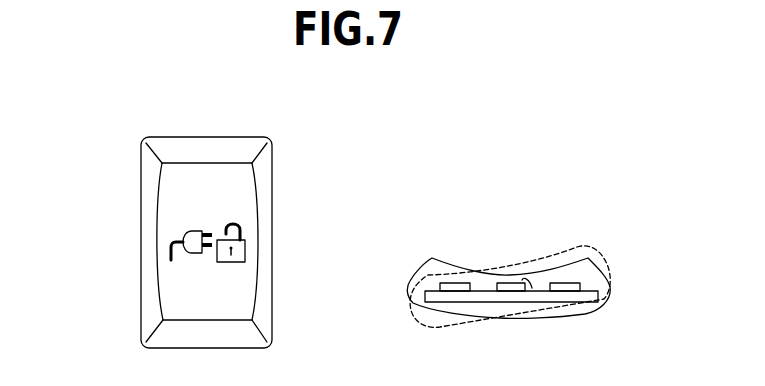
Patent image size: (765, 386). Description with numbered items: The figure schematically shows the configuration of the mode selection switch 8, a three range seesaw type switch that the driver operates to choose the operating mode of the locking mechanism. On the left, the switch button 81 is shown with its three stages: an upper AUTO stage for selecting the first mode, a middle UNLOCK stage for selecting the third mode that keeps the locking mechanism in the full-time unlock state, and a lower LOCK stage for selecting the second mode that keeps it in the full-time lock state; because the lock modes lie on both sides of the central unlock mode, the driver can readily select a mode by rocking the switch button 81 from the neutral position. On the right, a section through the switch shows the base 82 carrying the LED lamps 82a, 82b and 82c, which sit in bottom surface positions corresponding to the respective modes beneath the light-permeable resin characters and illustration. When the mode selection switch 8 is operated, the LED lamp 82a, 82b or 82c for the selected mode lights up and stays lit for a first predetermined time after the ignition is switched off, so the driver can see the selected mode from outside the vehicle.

The mode selection switch 8 is at (277, 132).
The switch button 81 is at (262, 179).
The substrate 82 is at (589, 303).
The LED lamp 82a is at (432, 258).
The LED lamp 82b is at (532, 290).
The LED lamp 82c is at (606, 267).